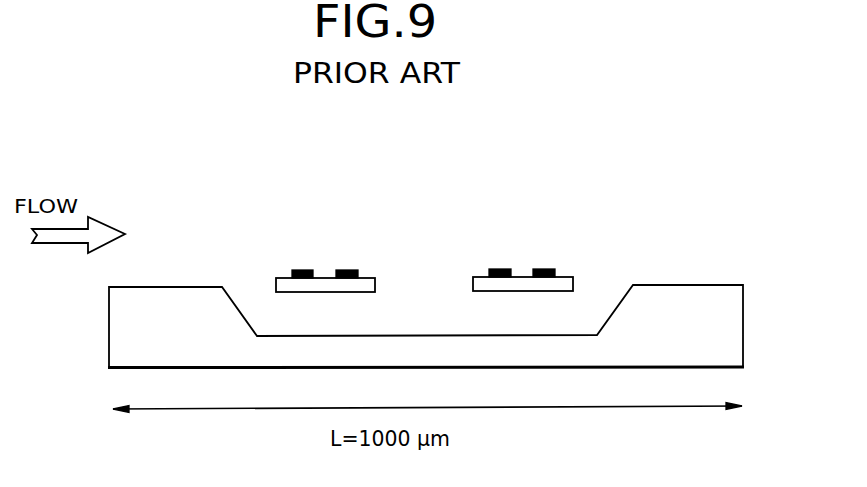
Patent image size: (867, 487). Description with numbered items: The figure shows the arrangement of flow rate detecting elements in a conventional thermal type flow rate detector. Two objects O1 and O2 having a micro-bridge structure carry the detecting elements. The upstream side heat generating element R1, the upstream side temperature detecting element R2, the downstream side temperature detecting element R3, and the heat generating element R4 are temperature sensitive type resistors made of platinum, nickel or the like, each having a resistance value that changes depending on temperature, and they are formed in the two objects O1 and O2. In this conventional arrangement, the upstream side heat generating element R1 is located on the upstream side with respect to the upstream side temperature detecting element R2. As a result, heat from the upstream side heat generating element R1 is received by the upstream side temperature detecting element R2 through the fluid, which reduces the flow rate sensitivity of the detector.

The upstream side heat generating element R1 is at (285, 266).
The upstream side temperature detecting element R2 is at (366, 266).
The downstream side temperature detecting element R3 is at (482, 265).
The heat generating element R4 is at (562, 266).
The object having a micro-bridge structure O1 is at (325, 264).
The object having a micro-bridge structure O2 is at (523, 263).